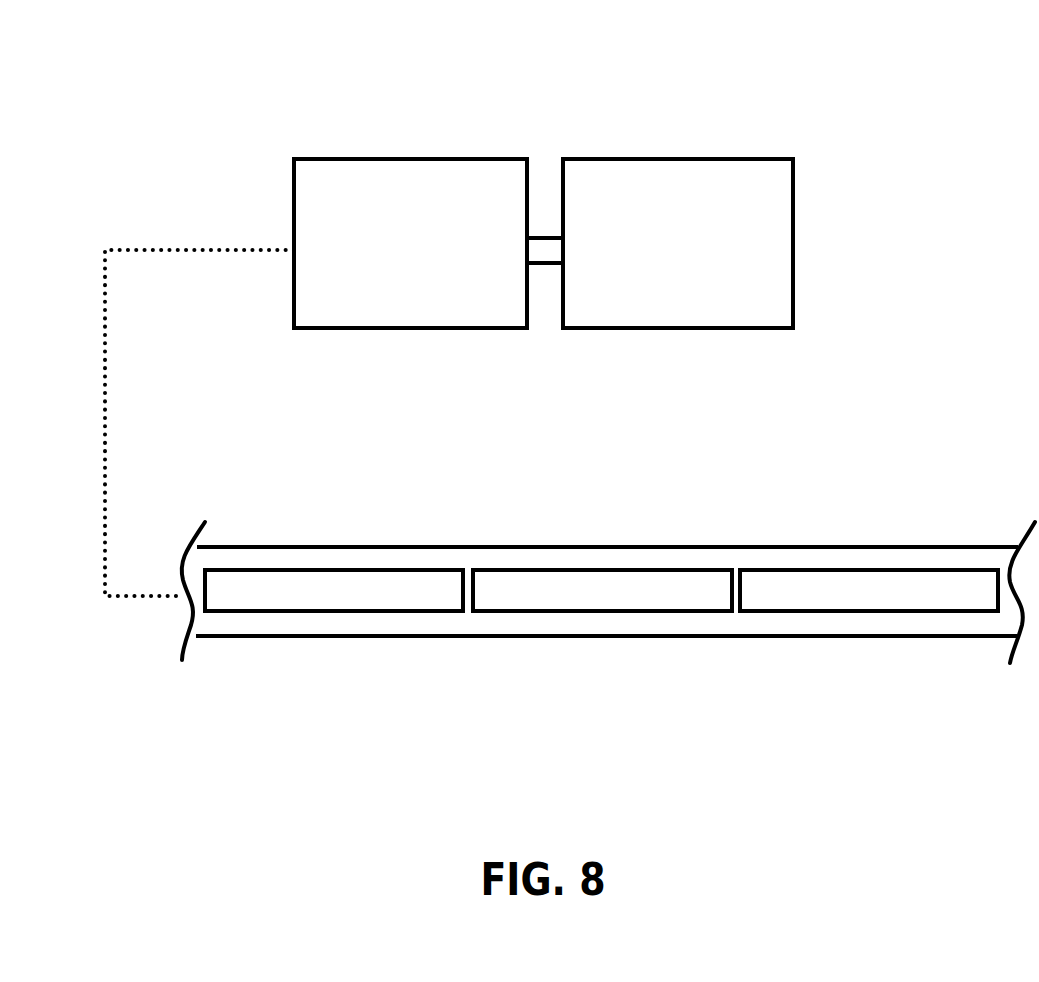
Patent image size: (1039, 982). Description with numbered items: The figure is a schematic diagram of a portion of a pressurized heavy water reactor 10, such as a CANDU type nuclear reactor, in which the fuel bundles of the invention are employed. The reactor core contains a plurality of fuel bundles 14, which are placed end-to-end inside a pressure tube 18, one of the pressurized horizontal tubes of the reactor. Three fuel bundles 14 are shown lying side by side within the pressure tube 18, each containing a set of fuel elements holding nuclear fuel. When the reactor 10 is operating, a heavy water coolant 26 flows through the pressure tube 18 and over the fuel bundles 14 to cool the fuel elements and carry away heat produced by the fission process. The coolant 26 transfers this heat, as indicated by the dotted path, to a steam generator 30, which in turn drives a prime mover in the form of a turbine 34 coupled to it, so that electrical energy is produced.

The pressurized heavy water reactor 10 is at (930, 77).
The fuel bundle 14 is at (323, 613).
The pressure tube 18 is at (703, 542).
The heavy water coolant 26 is at (425, 556).
The steam generator 30 is at (368, 157).
The turbine 34 is at (637, 158).